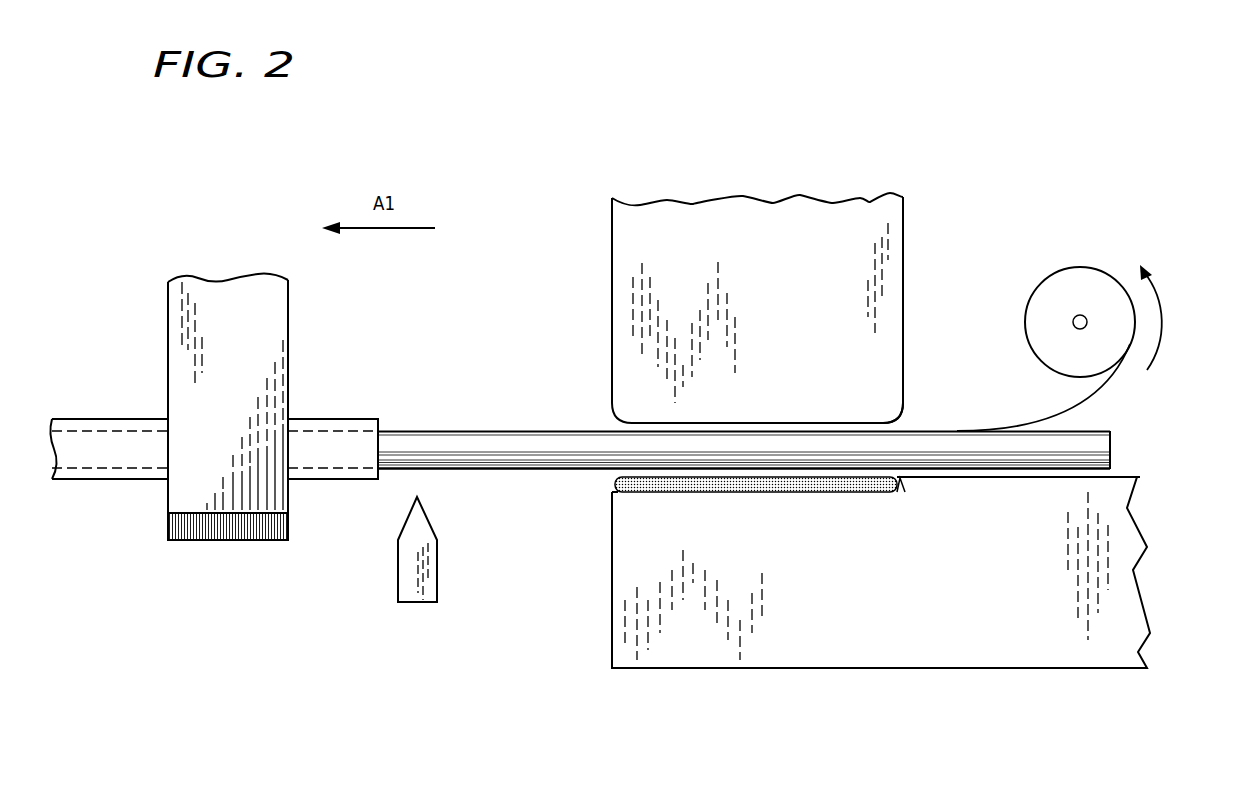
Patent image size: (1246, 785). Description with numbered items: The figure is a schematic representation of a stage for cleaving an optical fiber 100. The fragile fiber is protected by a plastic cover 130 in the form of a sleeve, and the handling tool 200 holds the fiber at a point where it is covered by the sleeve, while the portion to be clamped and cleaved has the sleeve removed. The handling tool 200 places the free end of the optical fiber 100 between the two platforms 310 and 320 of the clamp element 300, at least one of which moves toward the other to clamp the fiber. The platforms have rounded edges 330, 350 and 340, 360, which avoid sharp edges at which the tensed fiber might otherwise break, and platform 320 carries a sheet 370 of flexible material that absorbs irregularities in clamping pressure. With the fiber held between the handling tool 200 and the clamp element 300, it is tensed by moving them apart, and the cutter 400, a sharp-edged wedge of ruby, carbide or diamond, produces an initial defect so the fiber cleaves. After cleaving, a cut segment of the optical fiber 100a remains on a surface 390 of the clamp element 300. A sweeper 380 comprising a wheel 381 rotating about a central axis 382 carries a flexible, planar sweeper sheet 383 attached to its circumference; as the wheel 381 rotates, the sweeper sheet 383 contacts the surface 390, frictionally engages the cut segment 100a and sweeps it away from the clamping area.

The optical fiber 100 is at (412, 445).
The cut segment of the optical fiber 100a is at (1110, 431).
The plastic cover 130 is at (333, 419).
The handling tool 200 is at (178, 328).
The clamp element 300 is at (633, 186).
The platform 310 is at (622, 278).
The platform 320 is at (612, 590).
The rounded edge 330 is at (612, 418).
The rounded edge 340 is at (615, 483).
The rounded edge 350 is at (893, 421).
The rounded edge 360 is at (904, 488).
The sheet of flexible material 370 is at (745, 482).
The sweeper 380 is at (1034, 270).
The wheel 381 is at (1108, 270).
The central axis 382 is at (1080, 315).
The sweeper sheet 383 is at (1058, 412).
The surface of the clamp element 390 is at (1140, 476).
The cutter 400 is at (400, 578).